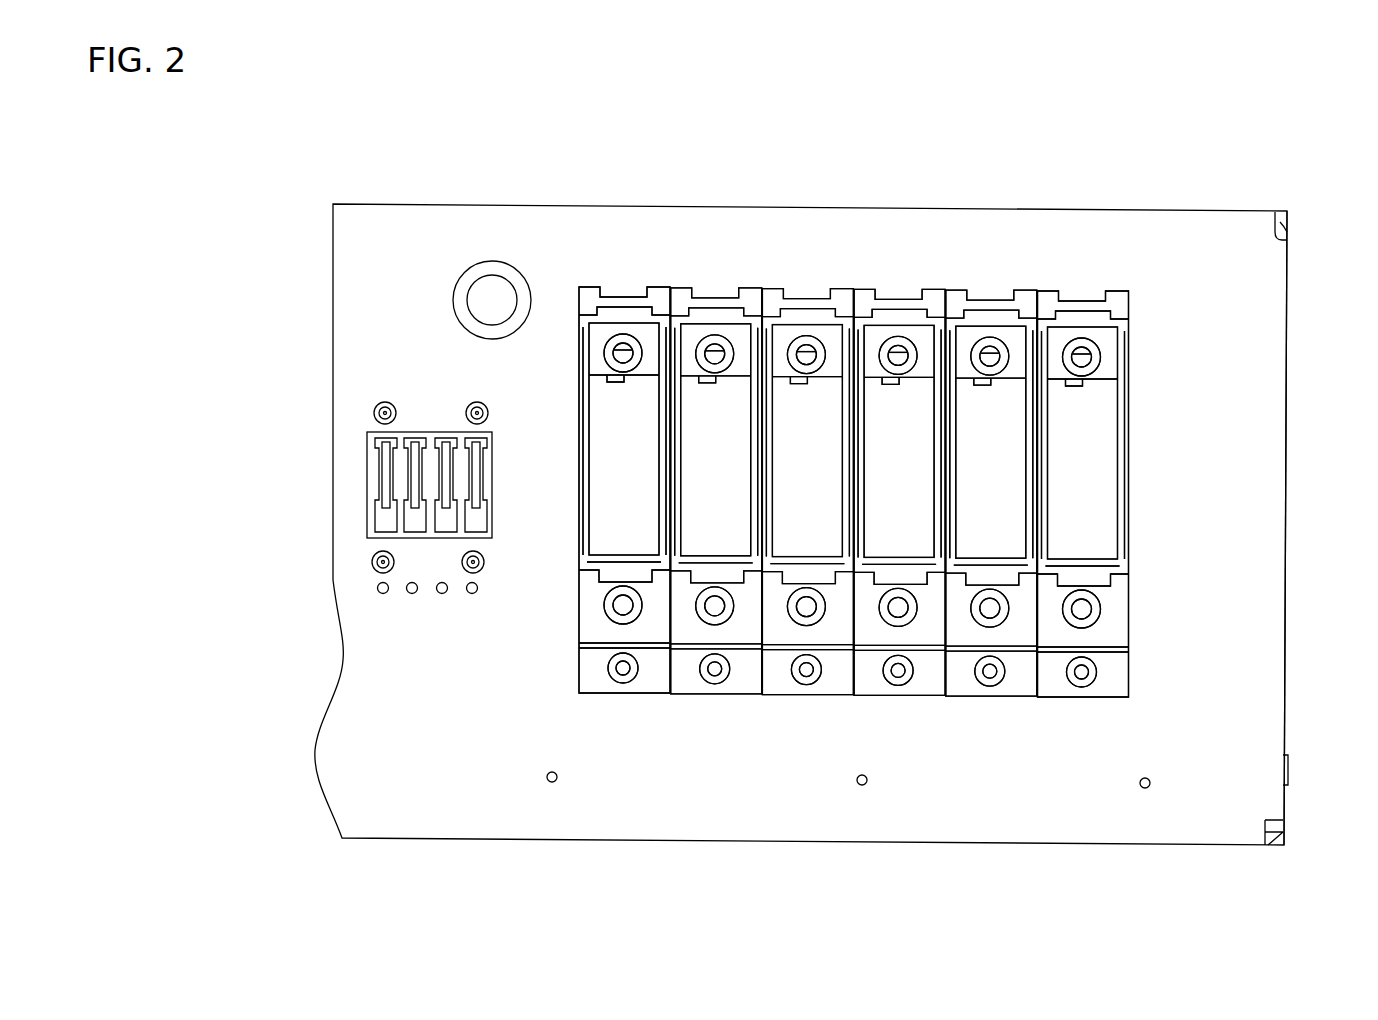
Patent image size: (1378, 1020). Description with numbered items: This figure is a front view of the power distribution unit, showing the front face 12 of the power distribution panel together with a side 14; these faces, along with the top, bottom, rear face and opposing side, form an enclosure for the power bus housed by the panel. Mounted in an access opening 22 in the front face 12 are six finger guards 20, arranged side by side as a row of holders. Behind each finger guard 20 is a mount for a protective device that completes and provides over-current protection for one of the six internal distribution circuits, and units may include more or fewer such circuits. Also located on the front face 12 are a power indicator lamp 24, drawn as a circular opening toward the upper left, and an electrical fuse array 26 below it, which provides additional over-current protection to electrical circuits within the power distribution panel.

The front face 12 is at (440, 778).
The side 14 is at (1285, 705).
The finger guards 20 is at (642, 697).
The access opening 22 is at (1150, 608).
The power indicator lamp 24 is at (492, 293).
The electrical fuse array 26 is at (421, 400).